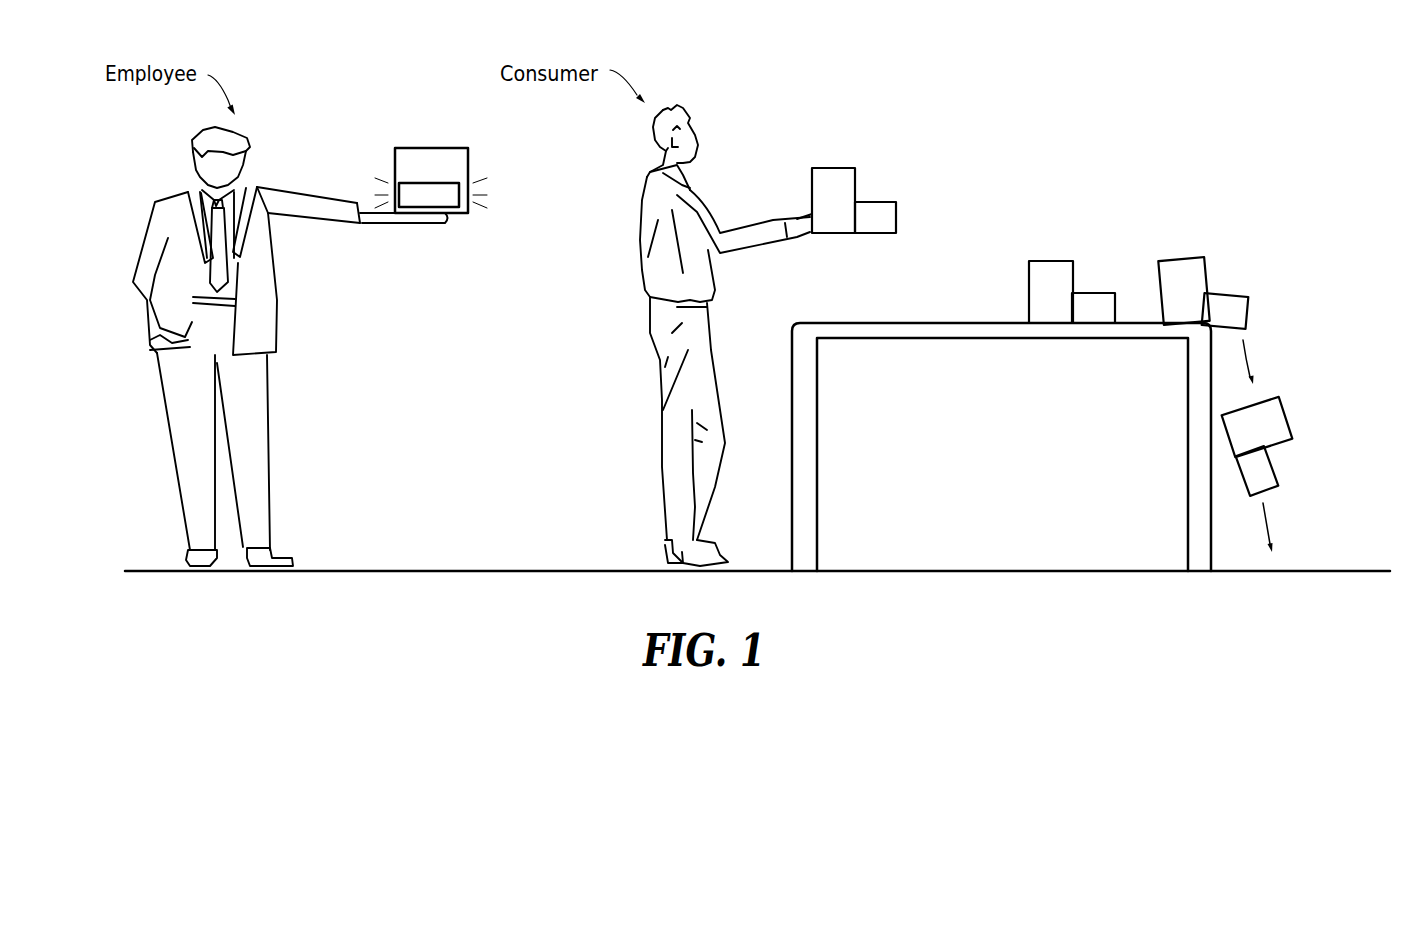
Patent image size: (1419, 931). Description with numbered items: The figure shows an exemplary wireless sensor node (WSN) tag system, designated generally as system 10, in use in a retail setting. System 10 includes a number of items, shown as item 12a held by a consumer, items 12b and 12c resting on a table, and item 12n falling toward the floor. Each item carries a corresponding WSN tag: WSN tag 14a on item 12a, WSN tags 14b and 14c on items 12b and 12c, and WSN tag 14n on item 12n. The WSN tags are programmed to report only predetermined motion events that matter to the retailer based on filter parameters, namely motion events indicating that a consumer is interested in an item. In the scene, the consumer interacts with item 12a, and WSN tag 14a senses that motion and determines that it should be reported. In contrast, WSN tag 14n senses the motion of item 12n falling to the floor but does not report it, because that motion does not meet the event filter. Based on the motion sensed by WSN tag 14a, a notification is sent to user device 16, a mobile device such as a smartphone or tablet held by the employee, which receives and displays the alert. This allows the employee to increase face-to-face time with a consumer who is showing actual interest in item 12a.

The wireless sensor node tag system 10 is at (1106, 116).
The item 12a is at (817, 194).
The item 12b is at (1034, 287).
The item 12c is at (1167, 286).
The item 12n is at (1257, 427).
The WSN tag 14a is at (859, 228).
The WSN tag 14b is at (1076, 319).
The WSN tag 14c is at (1208, 322).
The WSN tag 14n is at (1257, 471).
The user device 16 is at (443, 175).